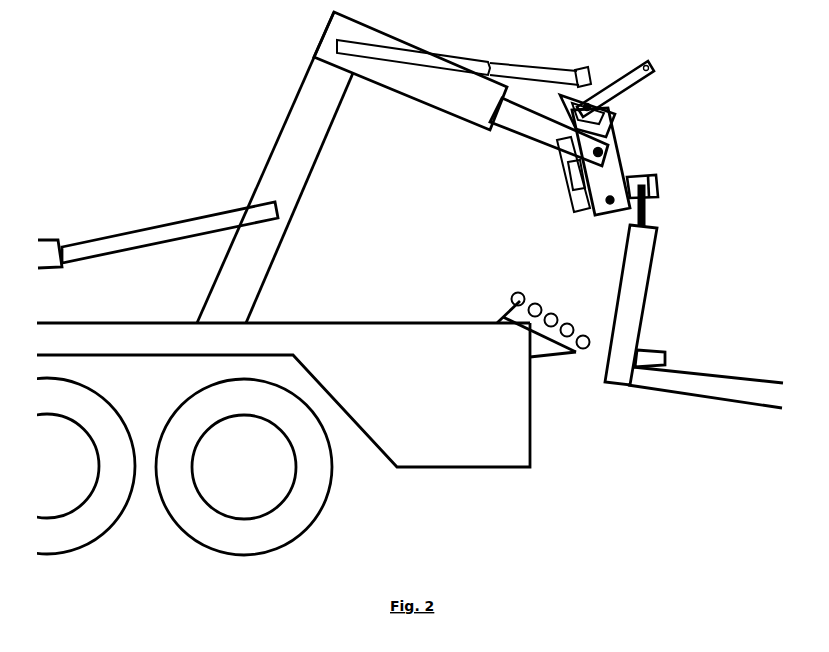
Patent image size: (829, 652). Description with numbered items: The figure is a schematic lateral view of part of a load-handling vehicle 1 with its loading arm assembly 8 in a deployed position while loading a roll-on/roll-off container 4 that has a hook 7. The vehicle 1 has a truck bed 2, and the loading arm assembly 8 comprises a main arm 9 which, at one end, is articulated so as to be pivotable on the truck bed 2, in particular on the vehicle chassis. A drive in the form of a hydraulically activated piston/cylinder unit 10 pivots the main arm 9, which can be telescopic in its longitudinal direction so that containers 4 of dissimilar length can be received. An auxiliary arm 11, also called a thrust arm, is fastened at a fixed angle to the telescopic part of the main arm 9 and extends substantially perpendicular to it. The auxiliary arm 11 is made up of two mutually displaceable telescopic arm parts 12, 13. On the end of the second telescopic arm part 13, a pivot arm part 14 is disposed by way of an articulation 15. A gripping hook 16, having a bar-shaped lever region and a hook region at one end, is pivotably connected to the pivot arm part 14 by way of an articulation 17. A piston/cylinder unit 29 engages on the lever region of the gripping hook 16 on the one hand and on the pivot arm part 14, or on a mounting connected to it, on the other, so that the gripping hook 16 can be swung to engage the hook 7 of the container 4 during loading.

The load-handling vehicle 1 is at (570, 475).
The truck bed 2 is at (329, 302).
The roll-on/roll-off container 4 is at (635, 297).
The hook 7 is at (647, 213).
The loading arm assembly 8 is at (247, 82).
The main arm 9 is at (303, 167).
The piston/cylinder unit 10 is at (93, 231).
The auxiliary arm 11 is at (520, 120).
The telescopic arm part 12 is at (455, 102).
The telescopic arm part 13 is at (543, 132).
The pivot arm part 14 is at (617, 135).
The articulation 15 is at (607, 152).
The gripping hook 16 is at (658, 185).
The articulation 17 is at (607, 208).
The piston/cylinder unit 29 is at (563, 167).